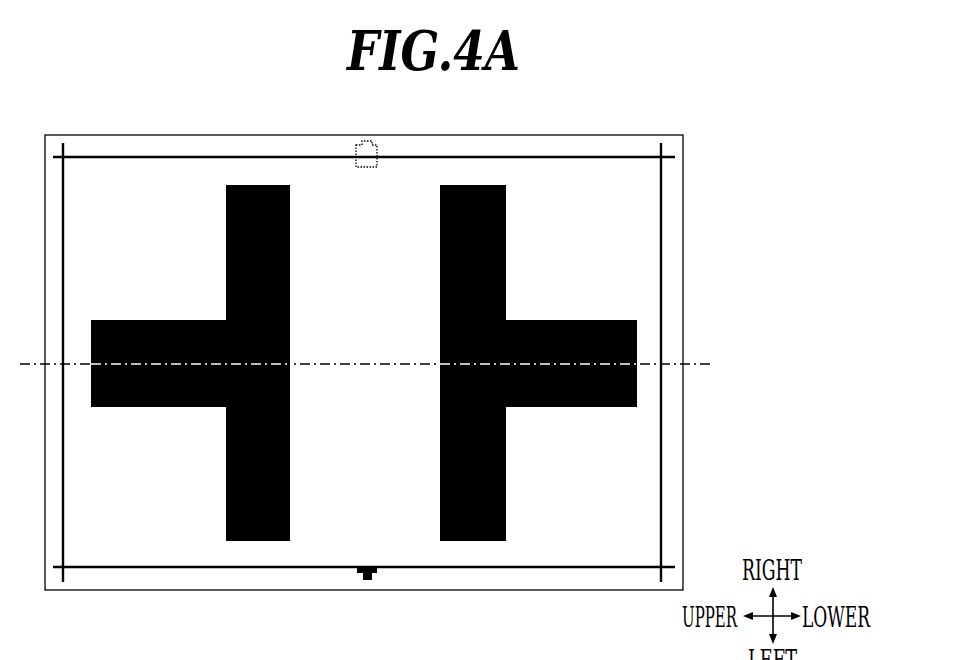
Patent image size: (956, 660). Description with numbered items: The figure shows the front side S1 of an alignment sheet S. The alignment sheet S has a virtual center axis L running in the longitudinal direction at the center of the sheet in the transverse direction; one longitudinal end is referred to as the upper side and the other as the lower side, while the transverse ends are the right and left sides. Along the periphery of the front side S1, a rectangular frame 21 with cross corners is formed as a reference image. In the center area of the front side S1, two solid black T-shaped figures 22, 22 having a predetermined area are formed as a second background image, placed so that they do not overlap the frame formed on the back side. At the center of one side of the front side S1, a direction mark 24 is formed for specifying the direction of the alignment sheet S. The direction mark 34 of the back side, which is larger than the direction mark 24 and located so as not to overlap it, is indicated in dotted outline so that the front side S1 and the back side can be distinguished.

The rectangular frame 21 is at (165, 158).
The solid black T-shaped figure 22 is at (226, 243).
The direction mark 24 is at (362, 576).
The direction mark 34 is at (373, 144).
The alignment sheet S is at (592, 127).
The front side S1 is at (423, 177).
The virtual center axis L is at (379, 364).